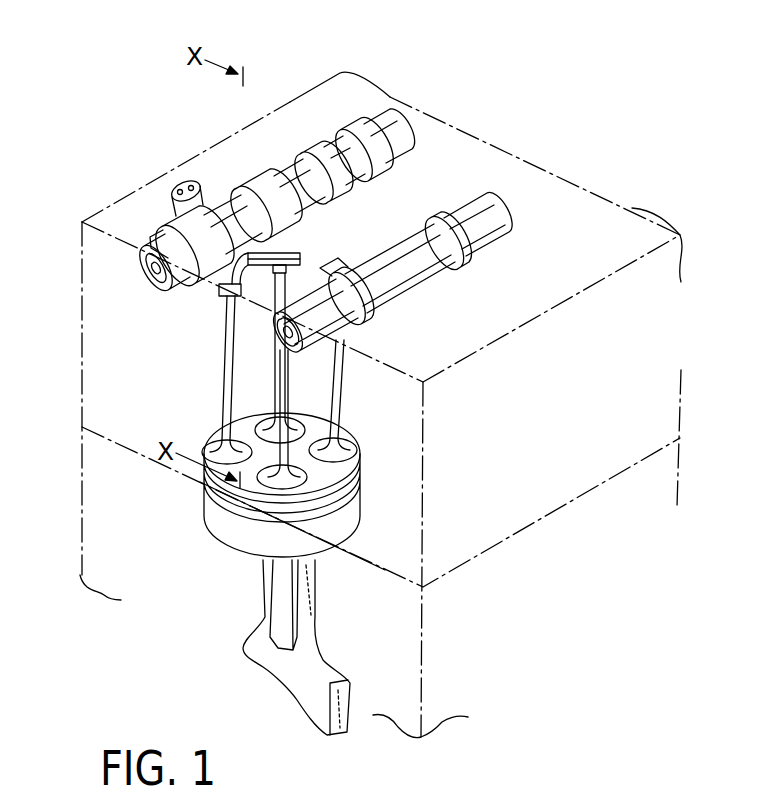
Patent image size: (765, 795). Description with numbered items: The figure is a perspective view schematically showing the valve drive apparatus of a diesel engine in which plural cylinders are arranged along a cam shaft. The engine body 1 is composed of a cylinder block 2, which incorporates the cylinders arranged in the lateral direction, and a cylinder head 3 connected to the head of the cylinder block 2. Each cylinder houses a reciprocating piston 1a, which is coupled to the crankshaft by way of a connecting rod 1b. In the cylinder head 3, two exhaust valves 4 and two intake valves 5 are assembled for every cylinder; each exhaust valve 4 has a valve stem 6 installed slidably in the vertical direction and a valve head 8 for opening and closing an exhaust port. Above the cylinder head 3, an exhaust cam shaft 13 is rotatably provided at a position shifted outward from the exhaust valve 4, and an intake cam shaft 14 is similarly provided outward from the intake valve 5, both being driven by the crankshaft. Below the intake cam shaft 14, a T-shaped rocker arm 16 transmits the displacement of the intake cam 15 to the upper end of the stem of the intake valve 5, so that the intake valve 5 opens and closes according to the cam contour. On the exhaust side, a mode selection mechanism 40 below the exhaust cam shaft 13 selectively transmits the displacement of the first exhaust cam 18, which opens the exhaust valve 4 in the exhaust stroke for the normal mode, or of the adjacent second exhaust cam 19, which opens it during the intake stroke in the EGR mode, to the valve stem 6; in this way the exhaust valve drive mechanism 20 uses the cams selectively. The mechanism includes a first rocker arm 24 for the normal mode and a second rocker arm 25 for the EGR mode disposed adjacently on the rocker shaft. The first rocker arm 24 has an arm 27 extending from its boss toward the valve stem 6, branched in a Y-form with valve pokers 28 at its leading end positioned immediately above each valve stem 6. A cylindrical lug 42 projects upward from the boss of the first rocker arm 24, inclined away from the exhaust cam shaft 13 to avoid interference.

The engine body 1 is at (391, 404).
The piston 1a is at (281, 485).
The connecting rod 1b is at (320, 638).
The cylinder block 2 is at (718, 400).
The cylinder head 3 is at (660, 432).
The exhaust valve 4 is at (249, 381).
The intake valve 5 is at (364, 462).
The valve stem 6 is at (226, 370).
The valve head 8 is at (214, 448).
The exhaust cam shaft 13 is at (262, 186).
The intake cam shaft 14 is at (415, 262).
The intake cam 15 is at (462, 265).
The rocker arm 16 is at (350, 262).
The first exhaust cam 18 is at (148, 245).
The second exhaust cam 19 is at (258, 192).
The exhaust valve drive mechanism 20 is at (288, 84).
The first rocker arm 24 is at (83, 250).
The second rocker arm 25 is at (215, 200).
The arm 27 is at (262, 266).
The valve poker 28 is at (304, 262).
The mode selection mechanism 40 is at (142, 172).
The cylindrical lug 42 is at (172, 185).